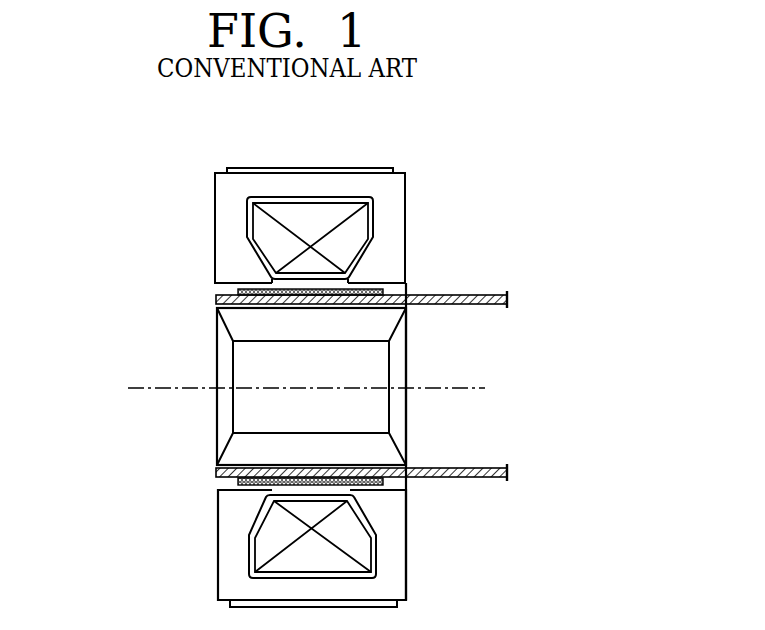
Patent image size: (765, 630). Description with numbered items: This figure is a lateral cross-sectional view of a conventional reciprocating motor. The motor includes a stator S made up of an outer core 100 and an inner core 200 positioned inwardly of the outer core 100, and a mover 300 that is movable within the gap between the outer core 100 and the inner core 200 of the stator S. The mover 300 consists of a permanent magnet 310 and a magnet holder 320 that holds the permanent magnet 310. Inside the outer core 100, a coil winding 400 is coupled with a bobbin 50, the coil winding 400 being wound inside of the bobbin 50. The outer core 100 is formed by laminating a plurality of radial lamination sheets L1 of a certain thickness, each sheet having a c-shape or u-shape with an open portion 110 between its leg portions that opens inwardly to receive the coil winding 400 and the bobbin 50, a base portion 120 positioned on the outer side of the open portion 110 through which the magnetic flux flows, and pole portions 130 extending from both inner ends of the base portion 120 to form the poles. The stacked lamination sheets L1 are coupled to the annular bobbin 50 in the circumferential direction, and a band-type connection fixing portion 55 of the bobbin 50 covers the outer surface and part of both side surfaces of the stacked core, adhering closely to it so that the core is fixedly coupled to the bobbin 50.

The outer core 100 is at (207, 218).
The open portion 110 is at (248, 286).
The base portion 120 is at (252, 181).
The pole portions 130 is at (383, 290).
The inner core 200 is at (207, 326).
The mover 300 is at (142, 502).
The permanent magnet 310 is at (268, 484).
The magnet holder 320 is at (270, 497).
The coil winding 400 is at (297, 206).
The bobbin 50 is at (343, 203).
The connection fixing portion 55 is at (385, 168).
The stator S is at (80, 192).
The radial lamination sheets L1 is at (410, 231).